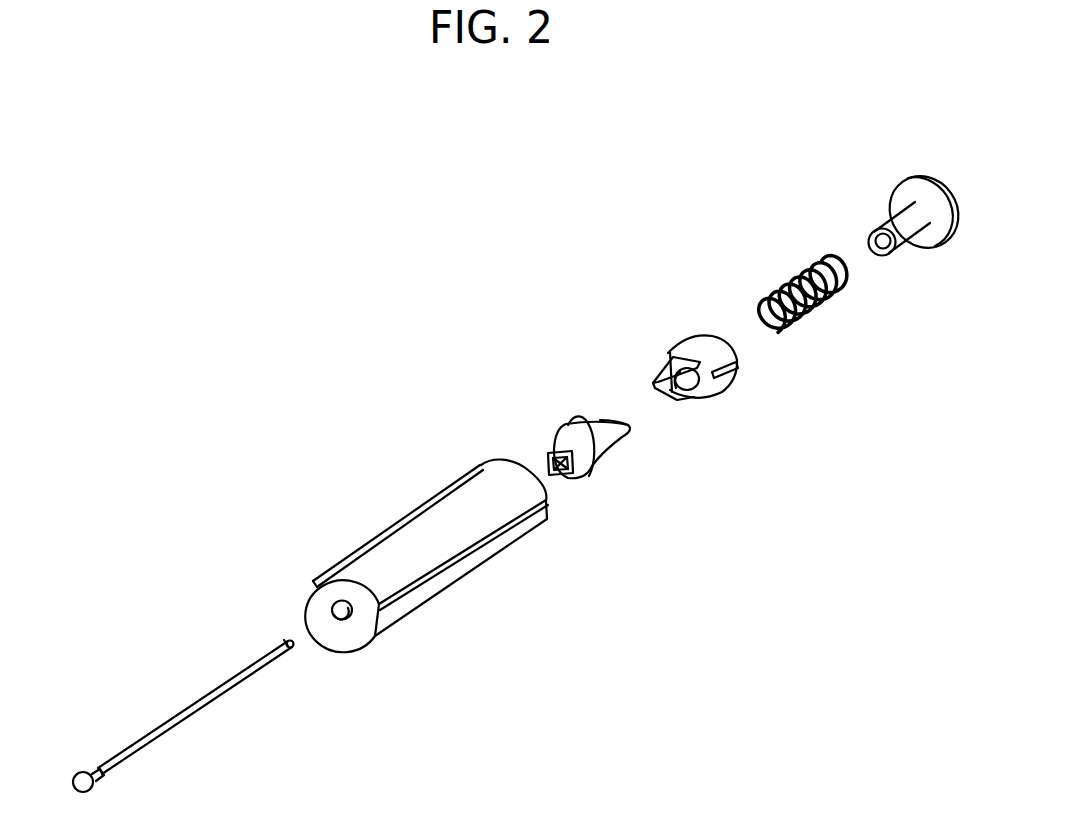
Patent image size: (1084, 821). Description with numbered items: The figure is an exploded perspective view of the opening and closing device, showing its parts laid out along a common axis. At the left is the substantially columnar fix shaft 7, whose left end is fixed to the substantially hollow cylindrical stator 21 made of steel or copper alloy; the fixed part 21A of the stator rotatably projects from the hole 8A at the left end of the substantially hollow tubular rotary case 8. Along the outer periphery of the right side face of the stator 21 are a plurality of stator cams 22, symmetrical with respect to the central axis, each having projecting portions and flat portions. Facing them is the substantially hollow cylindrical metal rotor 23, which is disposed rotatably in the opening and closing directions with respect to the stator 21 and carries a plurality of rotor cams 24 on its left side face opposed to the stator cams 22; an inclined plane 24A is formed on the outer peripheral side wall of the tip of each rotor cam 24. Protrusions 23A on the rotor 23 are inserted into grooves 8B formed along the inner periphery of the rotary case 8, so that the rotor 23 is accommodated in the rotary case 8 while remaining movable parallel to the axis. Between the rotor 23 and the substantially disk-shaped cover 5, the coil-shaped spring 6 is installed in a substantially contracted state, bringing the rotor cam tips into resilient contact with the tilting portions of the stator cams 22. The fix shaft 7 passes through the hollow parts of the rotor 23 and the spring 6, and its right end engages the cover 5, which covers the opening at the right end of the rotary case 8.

The cover 5 is at (900, 180).
The spring 6 is at (817, 313).
The fix shaft 7 is at (165, 722).
The rotary case 8 is at (426, 571).
The hole 8A is at (345, 613).
The grooves 8B is at (457, 575).
The stator 21 is at (615, 454).
The fixed part 21A is at (575, 468).
The stator cams 22 is at (620, 437).
The rotor 23 is at (741, 367).
The protrusions 23A is at (732, 373).
The rotor cams 24 is at (725, 424).
The inclined plane 24A is at (677, 400).